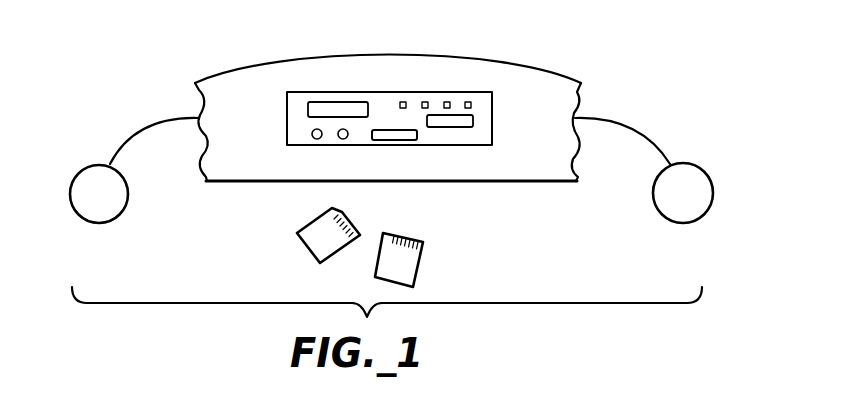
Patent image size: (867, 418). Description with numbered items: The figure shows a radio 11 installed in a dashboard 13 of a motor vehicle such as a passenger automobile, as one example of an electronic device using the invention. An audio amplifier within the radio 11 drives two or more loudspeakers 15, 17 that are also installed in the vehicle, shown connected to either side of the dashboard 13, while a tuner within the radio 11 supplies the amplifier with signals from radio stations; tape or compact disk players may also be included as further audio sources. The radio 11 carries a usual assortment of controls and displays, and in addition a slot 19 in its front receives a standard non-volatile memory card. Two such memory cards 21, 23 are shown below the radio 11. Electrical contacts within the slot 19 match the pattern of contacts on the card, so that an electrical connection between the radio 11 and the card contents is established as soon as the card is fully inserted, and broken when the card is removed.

The radio 11 is at (389, 122).
The dashboard 13 is at (513, 78).
The loudspeaker 15 is at (102, 207).
The loudspeaker 17 is at (685, 207).
The slot 19 is at (397, 140).
The memory card 21 is at (320, 243).
The memory card 23 is at (413, 258).